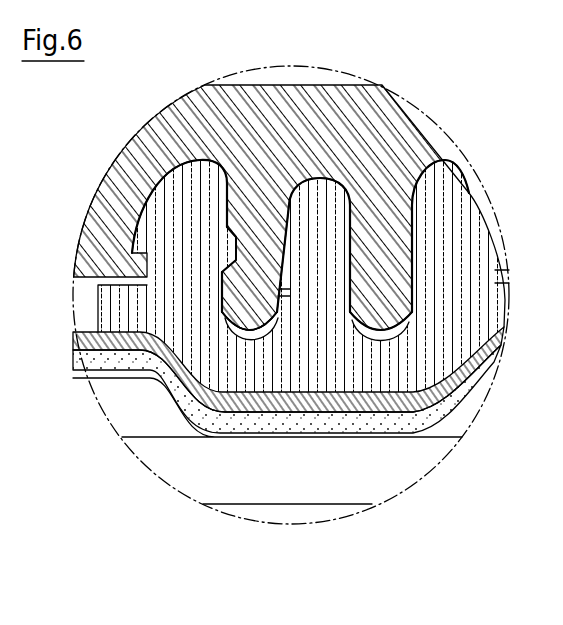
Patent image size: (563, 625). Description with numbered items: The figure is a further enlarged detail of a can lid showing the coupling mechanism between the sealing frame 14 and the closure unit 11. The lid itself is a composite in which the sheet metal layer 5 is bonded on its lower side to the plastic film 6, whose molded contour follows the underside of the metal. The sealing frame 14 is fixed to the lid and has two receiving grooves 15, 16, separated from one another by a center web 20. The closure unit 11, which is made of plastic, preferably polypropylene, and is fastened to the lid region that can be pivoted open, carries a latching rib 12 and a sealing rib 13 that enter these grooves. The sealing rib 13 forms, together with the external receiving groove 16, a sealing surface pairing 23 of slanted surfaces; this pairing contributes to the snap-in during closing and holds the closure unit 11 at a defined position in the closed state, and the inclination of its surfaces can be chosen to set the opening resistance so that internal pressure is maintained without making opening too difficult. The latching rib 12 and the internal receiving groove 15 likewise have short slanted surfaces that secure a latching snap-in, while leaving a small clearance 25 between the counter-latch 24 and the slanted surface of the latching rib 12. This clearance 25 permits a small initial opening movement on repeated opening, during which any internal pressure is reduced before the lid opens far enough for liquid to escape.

The sheet metal layer 5 is at (240, 409).
The plastic film 6 is at (213, 419).
The closure unit 11 is at (397, 117).
The latching rib 12 is at (252, 318).
The sealing rib 13 is at (410, 260).
The sealing frame 14 is at (502, 230).
The receiving groove 15 is at (278, 320).
The receiving groove 16 is at (377, 333).
The center web 20 is at (323, 215).
The sealing surface pairing 23 is at (425, 213).
The counter-latch 24 is at (225, 222).
The clearance 25 is at (226, 240).